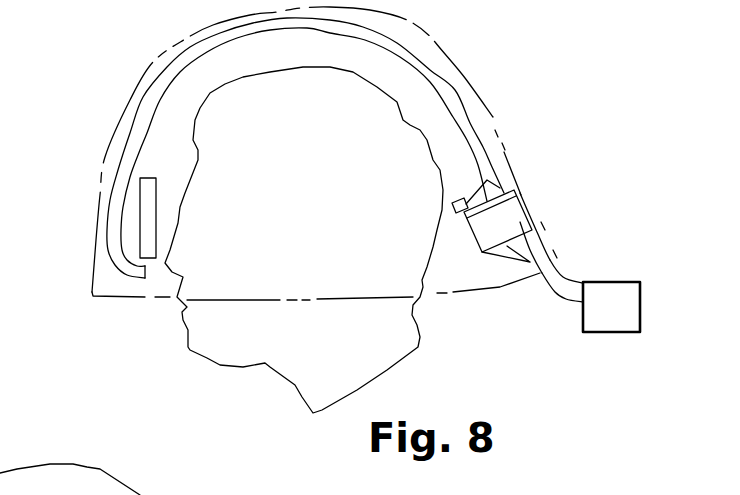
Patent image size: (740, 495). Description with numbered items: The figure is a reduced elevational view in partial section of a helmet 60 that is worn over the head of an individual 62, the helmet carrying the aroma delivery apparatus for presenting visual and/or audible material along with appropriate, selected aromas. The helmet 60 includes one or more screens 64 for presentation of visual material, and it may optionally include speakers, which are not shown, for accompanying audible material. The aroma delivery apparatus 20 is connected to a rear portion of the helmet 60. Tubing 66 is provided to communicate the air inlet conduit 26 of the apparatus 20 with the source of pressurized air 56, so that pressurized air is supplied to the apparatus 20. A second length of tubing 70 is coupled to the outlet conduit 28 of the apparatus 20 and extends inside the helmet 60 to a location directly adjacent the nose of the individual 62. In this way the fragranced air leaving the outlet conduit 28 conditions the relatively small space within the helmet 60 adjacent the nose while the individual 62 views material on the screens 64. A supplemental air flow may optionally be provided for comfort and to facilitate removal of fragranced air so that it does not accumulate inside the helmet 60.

The aroma delivery apparatus 20 is at (527, 198).
The air inlet conduit 26 is at (547, 240).
The outlet conduit 28 is at (507, 164).
The source of pressurized air 56 is at (618, 305).
The helmet 60 is at (492, 121).
The individual 62 is at (418, 347).
The screen 64 is at (147, 237).
The tubing 66 is at (557, 290).
The second length of tubing 70 is at (453, 106).